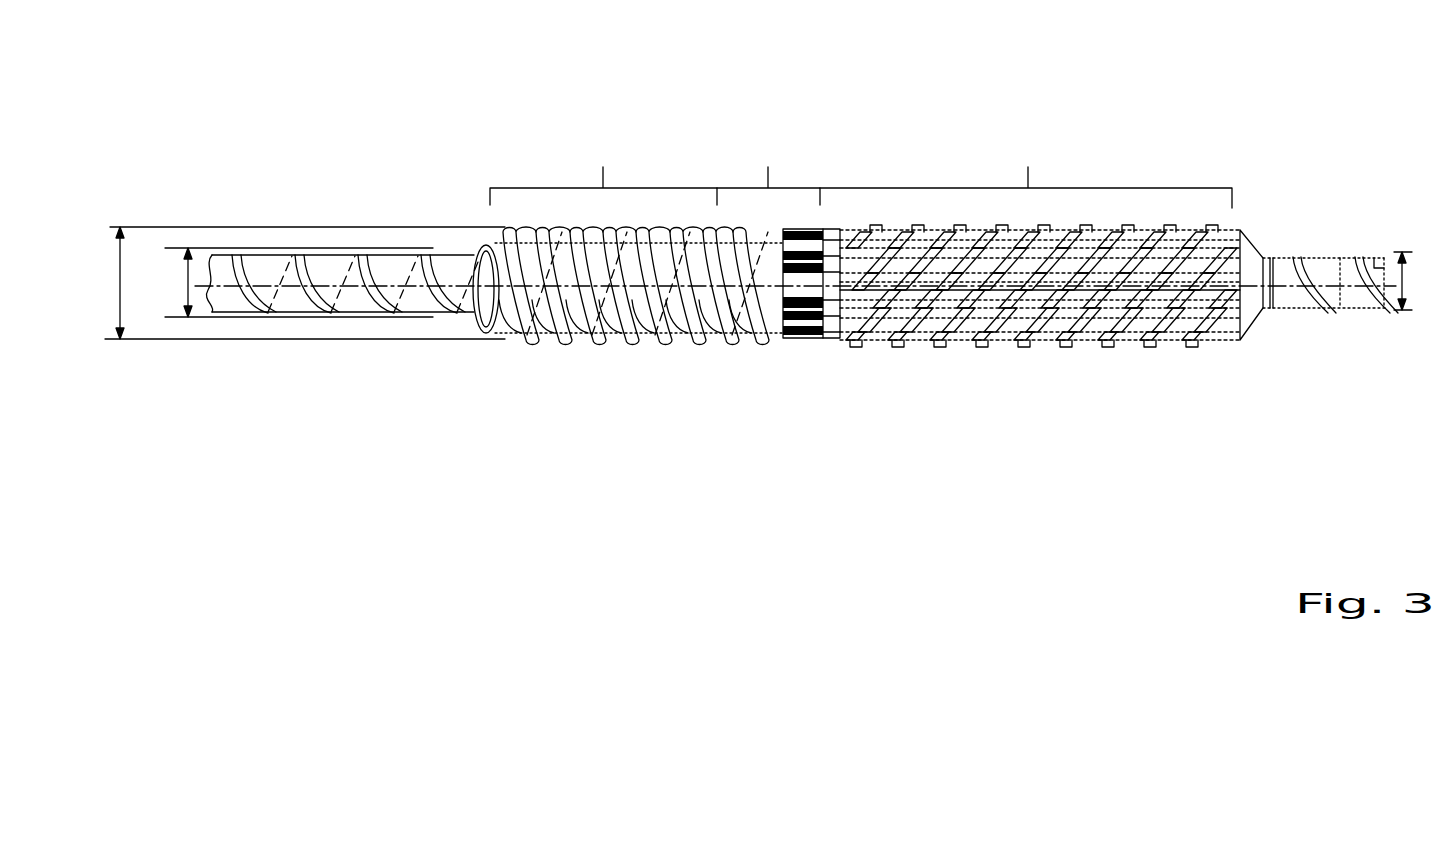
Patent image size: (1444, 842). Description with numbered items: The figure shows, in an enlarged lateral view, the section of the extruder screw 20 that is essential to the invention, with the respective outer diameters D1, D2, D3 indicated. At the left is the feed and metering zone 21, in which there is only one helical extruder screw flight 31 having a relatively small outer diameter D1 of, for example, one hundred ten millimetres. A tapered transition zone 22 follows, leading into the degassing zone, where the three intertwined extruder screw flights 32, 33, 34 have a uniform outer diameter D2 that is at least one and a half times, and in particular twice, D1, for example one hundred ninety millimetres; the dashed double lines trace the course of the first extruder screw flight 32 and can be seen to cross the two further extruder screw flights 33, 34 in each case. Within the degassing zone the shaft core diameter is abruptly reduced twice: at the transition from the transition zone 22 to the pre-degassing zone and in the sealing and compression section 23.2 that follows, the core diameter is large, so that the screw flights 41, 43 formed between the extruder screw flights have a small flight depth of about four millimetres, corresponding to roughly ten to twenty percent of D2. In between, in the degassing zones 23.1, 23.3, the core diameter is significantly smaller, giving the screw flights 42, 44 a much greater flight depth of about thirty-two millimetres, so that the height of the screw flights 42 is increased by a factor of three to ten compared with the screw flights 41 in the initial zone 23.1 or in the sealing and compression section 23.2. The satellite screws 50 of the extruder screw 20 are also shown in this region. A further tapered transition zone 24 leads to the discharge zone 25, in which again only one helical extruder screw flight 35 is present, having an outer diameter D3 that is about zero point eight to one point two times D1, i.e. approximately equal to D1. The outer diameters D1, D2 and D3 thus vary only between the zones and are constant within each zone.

The extruder screw 20 is at (177, 133).
The feed and metering zone 21 is at (290, 320).
The extruder screw flight 31 is at (380, 320).
The transition zone 22 is at (485, 240).
The screw flight 41 is at (507, 240).
The degassing zone 23.1 is at (603, 167).
The sealing and compression section 23.2 is at (768, 167).
The degassing zone 23.3 is at (1028, 167).
The screw flight 43 is at (737, 240).
The extruder screw flight 32 is at (520, 338).
The extruder screw flight 33 is at (548, 338).
The extruder screw flight 34 is at (592, 338).
The screw flight 42 is at (630, 320).
The screw flight 44 is at (887, 328).
The satellite screws 50 is at (1007, 322).
The transition zone 24 is at (1258, 252).
The extruder screw flight 35 is at (1302, 252).
The discharge zone 25 is at (1355, 275).
The outer diameter D1 is at (291, 282).
The outer diameter D2 is at (285, 283).
The outer diameter D3 is at (1415, 281).